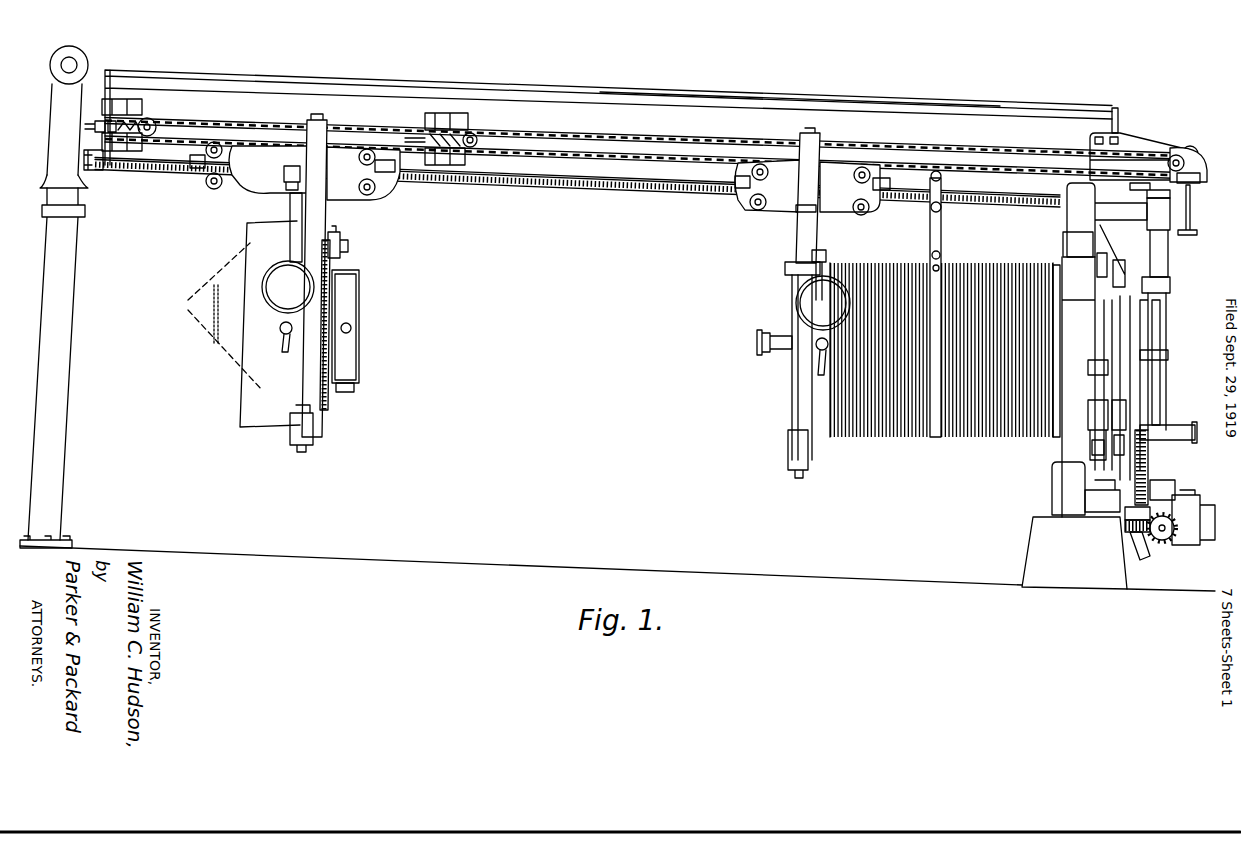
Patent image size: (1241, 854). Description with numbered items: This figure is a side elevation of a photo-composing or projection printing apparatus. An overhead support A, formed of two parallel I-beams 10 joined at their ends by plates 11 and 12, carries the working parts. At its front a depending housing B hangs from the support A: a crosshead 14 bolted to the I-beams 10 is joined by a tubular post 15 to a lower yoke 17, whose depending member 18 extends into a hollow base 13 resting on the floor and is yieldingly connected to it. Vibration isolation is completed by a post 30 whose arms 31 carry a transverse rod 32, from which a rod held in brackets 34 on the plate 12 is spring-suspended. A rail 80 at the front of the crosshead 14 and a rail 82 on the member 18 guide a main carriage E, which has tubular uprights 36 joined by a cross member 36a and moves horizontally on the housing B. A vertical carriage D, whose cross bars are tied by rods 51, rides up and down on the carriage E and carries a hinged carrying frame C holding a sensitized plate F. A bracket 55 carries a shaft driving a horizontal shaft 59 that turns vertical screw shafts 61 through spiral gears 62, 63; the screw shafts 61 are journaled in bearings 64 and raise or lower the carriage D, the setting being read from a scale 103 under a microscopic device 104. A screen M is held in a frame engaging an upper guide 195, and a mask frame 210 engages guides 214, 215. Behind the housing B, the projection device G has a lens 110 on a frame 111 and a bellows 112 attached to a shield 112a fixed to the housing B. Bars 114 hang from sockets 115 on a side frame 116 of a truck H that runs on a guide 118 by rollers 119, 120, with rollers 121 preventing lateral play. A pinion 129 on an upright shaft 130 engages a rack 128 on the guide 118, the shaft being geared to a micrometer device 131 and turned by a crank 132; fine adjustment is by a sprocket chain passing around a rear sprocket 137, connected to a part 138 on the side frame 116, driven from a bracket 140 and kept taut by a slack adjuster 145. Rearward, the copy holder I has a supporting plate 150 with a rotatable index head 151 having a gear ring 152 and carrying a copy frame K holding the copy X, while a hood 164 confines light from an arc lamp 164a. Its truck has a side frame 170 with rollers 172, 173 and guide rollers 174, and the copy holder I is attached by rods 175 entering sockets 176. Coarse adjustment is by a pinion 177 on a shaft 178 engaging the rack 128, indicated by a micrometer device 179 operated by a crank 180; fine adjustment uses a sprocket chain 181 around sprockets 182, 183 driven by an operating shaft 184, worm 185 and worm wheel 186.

The I-beams 10 is at (800, 111).
The plate 11 is at (1120, 121).
The plate 12 is at (116, 82).
The base member 13 is at (1074, 553).
The crosshead 14 is at (1068, 208).
The tubular post 15 is at (1105, 335).
The yoke 17 is at (1090, 475).
The depending member 18 is at (1085, 517).
The post 30 is at (72, 247).
The arms 31 is at (86, 184).
The transverse rod 32 is at (84, 58).
The brackets 34 is at (98, 172).
The tubular uprights 36 is at (1168, 249).
The horizontal cross member 36a is at (1172, 207).
The vertical tie rods 51 is at (1162, 368).
The bracket 55 is at (1175, 540).
The horizontal shaft 59 is at (1162, 542).
The vertical screw shafts 61 is at (1150, 446).
The spiral gear 62 is at (1140, 548).
The spiral gear 63 is at (1135, 530).
The bearings 64 is at (1130, 518).
The transverse rail 80 is at (1132, 205).
The horizontal rail 82 is at (1090, 505).
The scale 103 is at (1138, 388).
The microscopic device 104 is at (1182, 424).
The lens 110 is at (757, 343).
The frame 111 is at (792, 414).
The bellows 112 is at (880, 438).
The shield 112a is at (1053, 457).
The vertical bars 114 is at (790, 432).
The sockets 115 is at (797, 213).
The side frame 116 is at (807, 186).
The guide 118 is at (655, 190).
The rollers 119 is at (765, 165).
The rollers 120 is at (752, 208).
The rollers 121 is at (738, 182).
The rack 128 is at (550, 190).
The pinion 129 is at (815, 212).
The upright shaft 130 is at (832, 254).
The micrometer device 131 is at (823, 303).
The crank 132 is at (818, 372).
The rear sprocket wheel 137 is at (480, 132).
The part 138 is at (822, 132).
The bracket 140 is at (1145, 143).
The slack adjuster 145 is at (430, 112).
The supporting plate 150 is at (300, 425).
The index head 151 is at (320, 365).
The gear ring 152 is at (334, 290).
The hood 164 is at (242, 416).
The arc lamp 164a is at (208, 290).
The side frame 170 is at (341, 175).
The supporting and retaining rollers 172 is at (222, 158).
The supporting and retaining rollers 173 is at (205, 178).
The guide rollers 174 is at (185, 172).
The rods 175 is at (344, 246).
The sockets 176 is at (324, 199).
The pinion 177 is at (314, 173).
The shaft 178 is at (288, 212).
The micrometer device 179 is at (288, 287).
The crank 180 is at (282, 340).
The sprocket chain 181 is at (585, 130).
The front sprocket 182 is at (1177, 155).
The rear sprocket 183 is at (152, 127).
The operating shaft 184 is at (1201, 210).
The worm 185 is at (1196, 150).
The worm wheel 186 is at (1200, 176).
The upper guide 195 is at (1132, 255).
The frame 210 is at (1100, 371).
The guide 214 is at (1078, 244).
The guide 215 is at (1092, 424).
The overhead structural member A is at (624, 80).
The depending housing B is at (1060, 262).
The carrying frame C is at (1150, 313).
The vertical carriage D is at (1172, 285).
The main carriage E is at (1170, 480).
The sensitized plate F is at (1162, 331).
The projection device G is at (757, 375).
The carrier or truck H is at (805, 133).
The copy holder I is at (304, 145).
The copy frame K is at (360, 346).
The ruled screen M is at (1135, 318).
The copy X is at (357, 362).